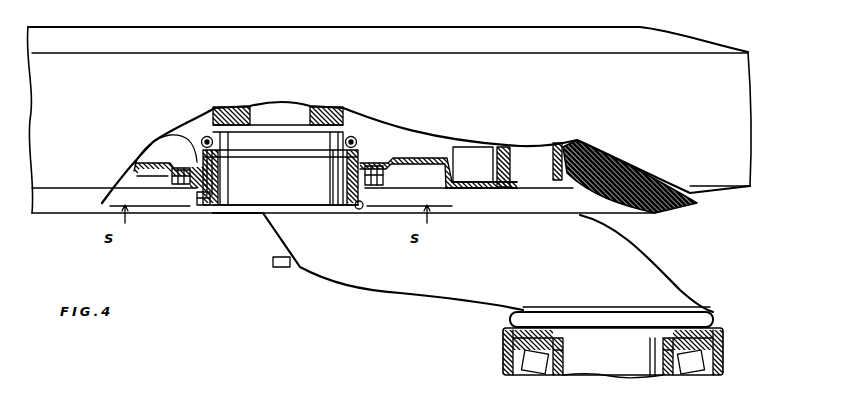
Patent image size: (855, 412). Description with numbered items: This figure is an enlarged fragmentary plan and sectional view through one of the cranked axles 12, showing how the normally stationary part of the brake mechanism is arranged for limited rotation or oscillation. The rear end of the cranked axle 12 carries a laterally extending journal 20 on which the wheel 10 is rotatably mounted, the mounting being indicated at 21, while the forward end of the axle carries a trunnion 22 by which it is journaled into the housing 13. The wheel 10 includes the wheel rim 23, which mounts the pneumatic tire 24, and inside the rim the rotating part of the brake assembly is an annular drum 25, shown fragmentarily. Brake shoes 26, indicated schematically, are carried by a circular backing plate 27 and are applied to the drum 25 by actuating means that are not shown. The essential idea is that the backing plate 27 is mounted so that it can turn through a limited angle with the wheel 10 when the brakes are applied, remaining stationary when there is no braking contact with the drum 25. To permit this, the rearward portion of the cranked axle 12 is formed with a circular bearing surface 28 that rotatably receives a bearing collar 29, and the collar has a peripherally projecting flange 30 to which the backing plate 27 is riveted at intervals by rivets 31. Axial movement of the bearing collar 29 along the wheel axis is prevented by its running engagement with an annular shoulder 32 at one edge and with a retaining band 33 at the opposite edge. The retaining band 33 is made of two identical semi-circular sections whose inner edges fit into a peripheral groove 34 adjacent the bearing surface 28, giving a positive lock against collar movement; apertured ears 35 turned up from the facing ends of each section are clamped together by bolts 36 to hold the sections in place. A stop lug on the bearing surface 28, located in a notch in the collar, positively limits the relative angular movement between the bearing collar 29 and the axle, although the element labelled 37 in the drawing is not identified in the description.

The wheel 10 is at (55, 216).
The cranked axle 12 is at (395, 283).
The housing 13 is at (722, 350).
The journal 20 is at (297, 107).
The wheel mounting 21 is at (328, 112).
The trunnion 22 is at (611, 368).
The wheel rim 23 is at (553, 143).
The pneumatic tire 24 is at (688, 207).
The annular drum 25 is at (497, 147).
The brake shoe 26 is at (467, 150).
The backing plate 27 is at (467, 187).
The bearing surface 28 is at (293, 203).
The bearing collar 29 is at (364, 210).
The flange 30 is at (390, 178).
The rivets 31 is at (184, 166).
The annular shoulder 32 is at (332, 208).
The retaining band 33 is at (360, 150).
The peripheral groove 34 is at (262, 160).
The apertured ears 35 is at (203, 136).
The bolts 36 is at (165, 133).
The shim block 37 is at (200, 208).